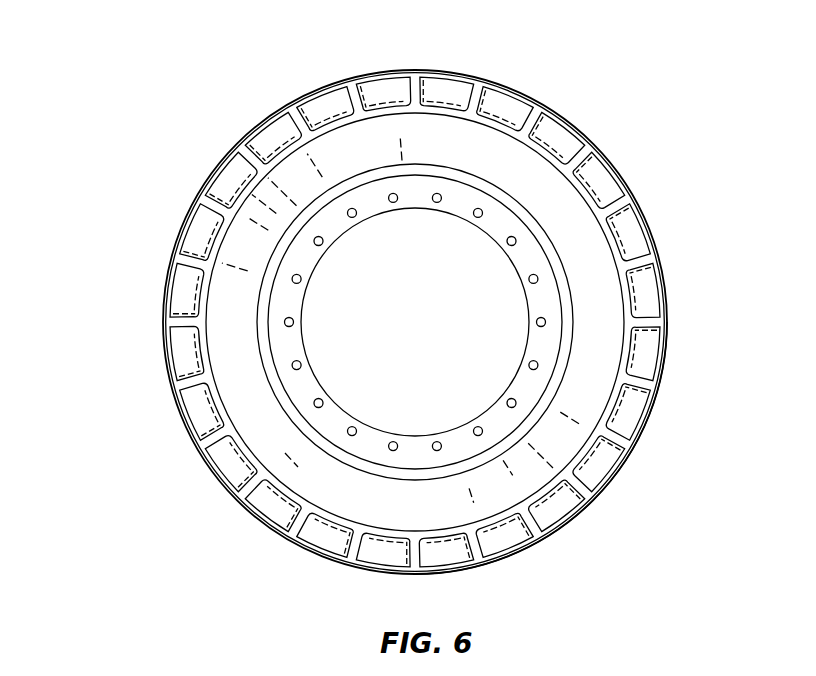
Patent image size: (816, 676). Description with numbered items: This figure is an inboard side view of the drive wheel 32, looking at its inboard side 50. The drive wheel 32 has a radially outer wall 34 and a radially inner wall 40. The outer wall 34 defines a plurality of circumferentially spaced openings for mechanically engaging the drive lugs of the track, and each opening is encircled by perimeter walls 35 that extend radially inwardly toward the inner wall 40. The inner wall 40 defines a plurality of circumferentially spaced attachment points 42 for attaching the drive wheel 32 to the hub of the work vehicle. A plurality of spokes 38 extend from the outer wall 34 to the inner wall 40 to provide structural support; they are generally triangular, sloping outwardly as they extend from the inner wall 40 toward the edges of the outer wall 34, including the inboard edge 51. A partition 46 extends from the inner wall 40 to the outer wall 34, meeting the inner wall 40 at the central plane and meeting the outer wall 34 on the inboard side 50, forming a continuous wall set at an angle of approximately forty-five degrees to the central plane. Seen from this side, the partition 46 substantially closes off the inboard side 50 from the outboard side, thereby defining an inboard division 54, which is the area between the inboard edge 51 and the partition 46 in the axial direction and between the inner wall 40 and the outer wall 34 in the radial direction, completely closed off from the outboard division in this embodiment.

The drive wheel 32 is at (112, 97).
The radially outer wall 34 is at (338, 82).
The perimeter walls 35 is at (325, 112).
The spokes 38 is at (240, 147).
The radially inner wall 40 is at (498, 227).
The attachment points 42 is at (538, 278).
The partition 46 is at (600, 293).
The inboard side 50 is at (592, 362).
The inboard edge 51 is at (643, 422).
The inboard division 54 is at (565, 440).